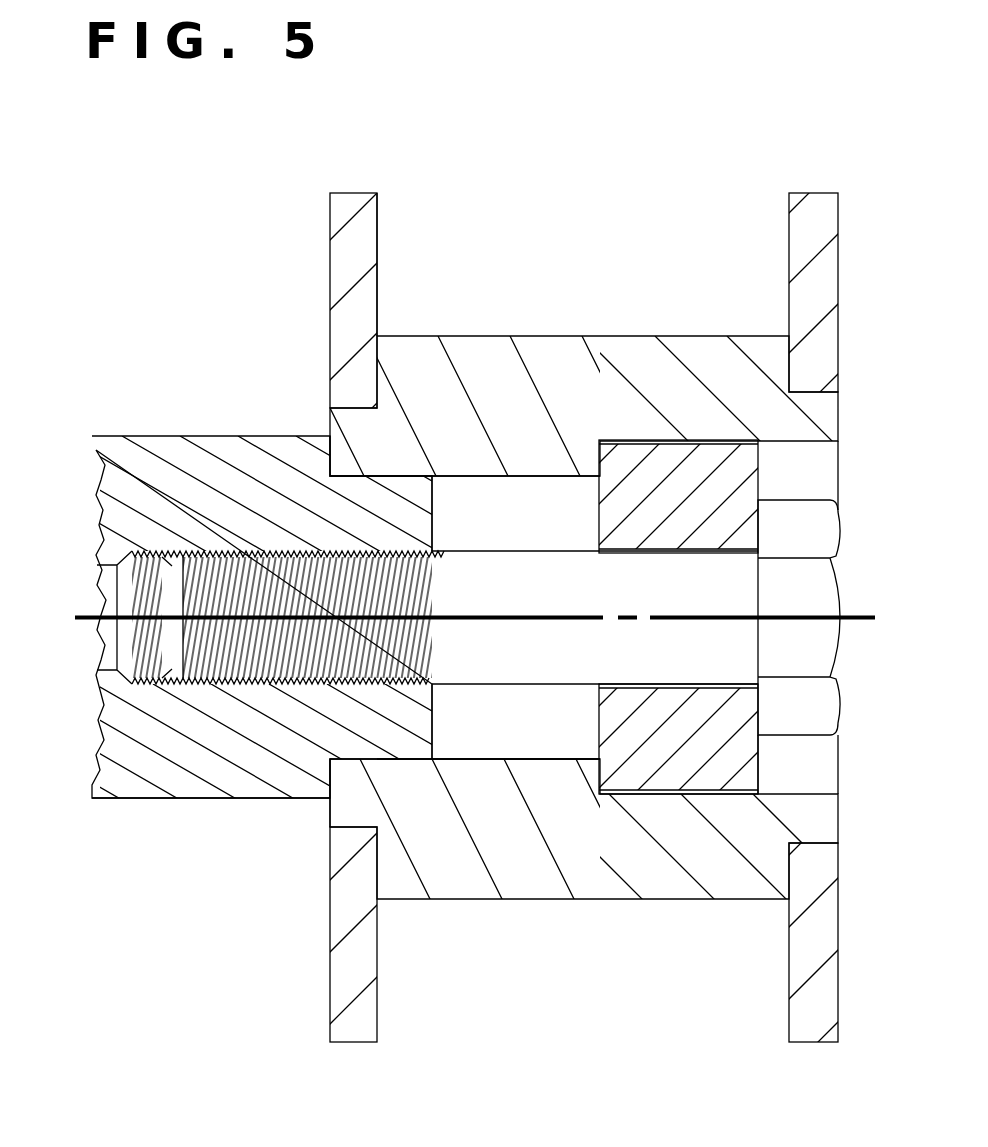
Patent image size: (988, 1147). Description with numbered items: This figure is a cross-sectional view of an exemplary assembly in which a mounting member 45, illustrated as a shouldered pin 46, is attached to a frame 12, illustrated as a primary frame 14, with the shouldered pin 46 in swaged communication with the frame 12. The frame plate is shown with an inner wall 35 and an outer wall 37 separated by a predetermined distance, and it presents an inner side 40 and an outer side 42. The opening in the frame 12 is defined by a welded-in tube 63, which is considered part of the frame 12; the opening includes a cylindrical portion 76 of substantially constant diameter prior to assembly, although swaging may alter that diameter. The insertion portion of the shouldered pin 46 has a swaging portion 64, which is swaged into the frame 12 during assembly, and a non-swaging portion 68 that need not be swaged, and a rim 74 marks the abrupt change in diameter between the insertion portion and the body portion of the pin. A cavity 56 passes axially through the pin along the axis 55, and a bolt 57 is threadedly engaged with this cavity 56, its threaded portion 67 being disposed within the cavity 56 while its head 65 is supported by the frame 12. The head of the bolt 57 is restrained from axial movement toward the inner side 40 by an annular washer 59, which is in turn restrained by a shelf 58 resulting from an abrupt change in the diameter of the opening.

The frame 12 is at (348, 281).
The primary frame 14 is at (383, 243).
The inner wall 35 is at (348, 210).
The outer wall 37 is at (837, 238).
The inner side 40 is at (337, 942).
The outer side 42 is at (840, 1003).
The mounting member 45 is at (137, 798).
The shouldered pin 46 is at (131, 422).
The axis 55 is at (87, 617).
The cavity 56 is at (127, 565).
The bolt 57 is at (823, 643).
The shelf 58 is at (606, 457).
The annular washer 59 is at (757, 758).
The welded-in tube 63 is at (542, 345).
The swaging portion 64 is at (360, 478).
The head 65 is at (823, 523).
The threaded portion 67 is at (213, 648).
The non-swaging portion 68 is at (413, 757).
The rim 74 is at (330, 779).
The cylindrical portion 76 is at (523, 757).